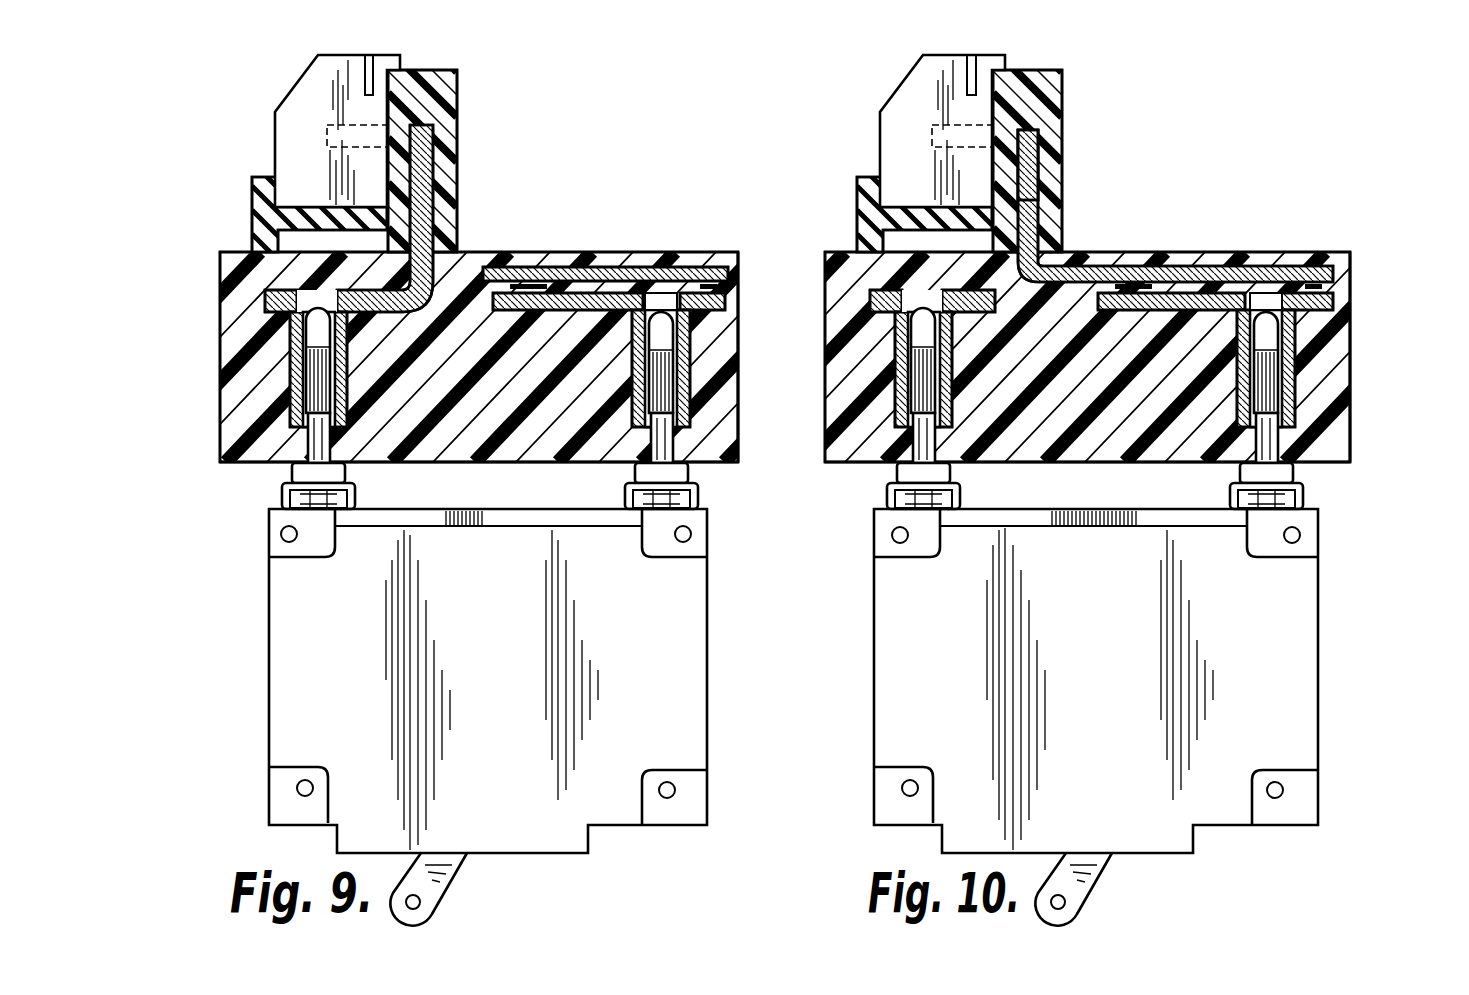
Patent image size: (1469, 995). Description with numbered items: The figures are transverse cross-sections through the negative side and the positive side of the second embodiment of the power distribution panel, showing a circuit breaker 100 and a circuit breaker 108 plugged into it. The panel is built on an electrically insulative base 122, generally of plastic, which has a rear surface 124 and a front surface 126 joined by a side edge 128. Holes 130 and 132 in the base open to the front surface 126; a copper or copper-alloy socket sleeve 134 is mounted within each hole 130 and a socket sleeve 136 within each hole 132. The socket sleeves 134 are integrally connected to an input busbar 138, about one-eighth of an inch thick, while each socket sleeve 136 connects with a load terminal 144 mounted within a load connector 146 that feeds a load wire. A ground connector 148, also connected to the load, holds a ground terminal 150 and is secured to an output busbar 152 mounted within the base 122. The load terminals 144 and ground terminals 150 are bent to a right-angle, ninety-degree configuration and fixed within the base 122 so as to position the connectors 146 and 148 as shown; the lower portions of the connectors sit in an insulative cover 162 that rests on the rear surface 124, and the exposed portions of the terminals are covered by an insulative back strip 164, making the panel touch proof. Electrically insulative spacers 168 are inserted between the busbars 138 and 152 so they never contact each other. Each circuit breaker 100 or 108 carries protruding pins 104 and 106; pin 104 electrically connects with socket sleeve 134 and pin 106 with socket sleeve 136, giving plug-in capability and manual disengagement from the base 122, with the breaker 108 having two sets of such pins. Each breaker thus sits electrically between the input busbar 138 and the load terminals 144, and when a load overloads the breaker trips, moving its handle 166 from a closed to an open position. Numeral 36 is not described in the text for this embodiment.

In FIG. 9, the contact pin lower portion 36 is at (283, 433).
In FIG. 9, the circuit breaker 100 is at (693, 740).
In FIG. 9, the protruding pin 104 is at (662, 414).
In FIG. 10, the protruding pin 104 is at (1346, 387).
In FIG. 9, the protruding pin 106 is at (318, 368).
In FIG. 10, the protruding pin 106 is at (845, 339).
In FIG. 10, the circuit breaker 108 is at (1054, 681).
In FIG. 9, the electrically insulative base 122 is at (578, 250).
In FIG. 10, the electrically insulative base 122 is at (1037, 329).
In FIG. 9, the rear surface 124 is at (738, 256).
In FIG. 10, the rear surface 124 is at (1385, 332).
In FIG. 9, the front surface 126 is at (717, 465).
In FIG. 10, the front surface 126 is at (1128, 483).
In FIG. 9, the side edge 128 is at (665, 382).
In FIG. 10, the side edge 128 is at (1348, 368).
In FIG. 9, the hole 130 is at (690, 455).
In FIG. 10, the hole 130 is at (1156, 372).
In FIG. 9, the hole 132 is at (300, 462).
In FIG. 10, the hole 132 is at (881, 510).
In FIG. 9, the socket sleeve 134 is at (686, 342).
In FIG. 10, the socket sleeve 134 is at (1338, 368).
In FIG. 10, the socket sleeve 136 is at (858, 471).
In FIG. 9, the input busbar 138 is at (650, 294).
In FIG. 10, the input busbar 138 is at (1248, 253).
In FIG. 9, the load terminal 144 is at (448, 198).
In FIG. 9, the load connector 146 is at (313, 90).
In FIG. 10, the ground connector 148 is at (910, 131).
In FIG. 10, the ground terminal 150 is at (1084, 153).
In FIG. 9, the output busbar 152 is at (700, 293).
In FIG. 10, the output busbar 152 is at (1271, 290).
In FIG. 9, the insulative cover 162 is at (252, 220).
In FIG. 10, the insulative cover 162 is at (886, 217).
In FIG. 9, the back strip 164 is at (448, 152).
In FIG. 10, the back strip 164 is at (1073, 150).
In FIG. 9, the handle 166 is at (455, 888).
In FIG. 10, the handle 166 is at (1108, 889).
In FIG. 9, the electrically insulative spacer 168 is at (565, 268).
In FIG. 10, the electrically insulative spacer 168 is at (1190, 206).